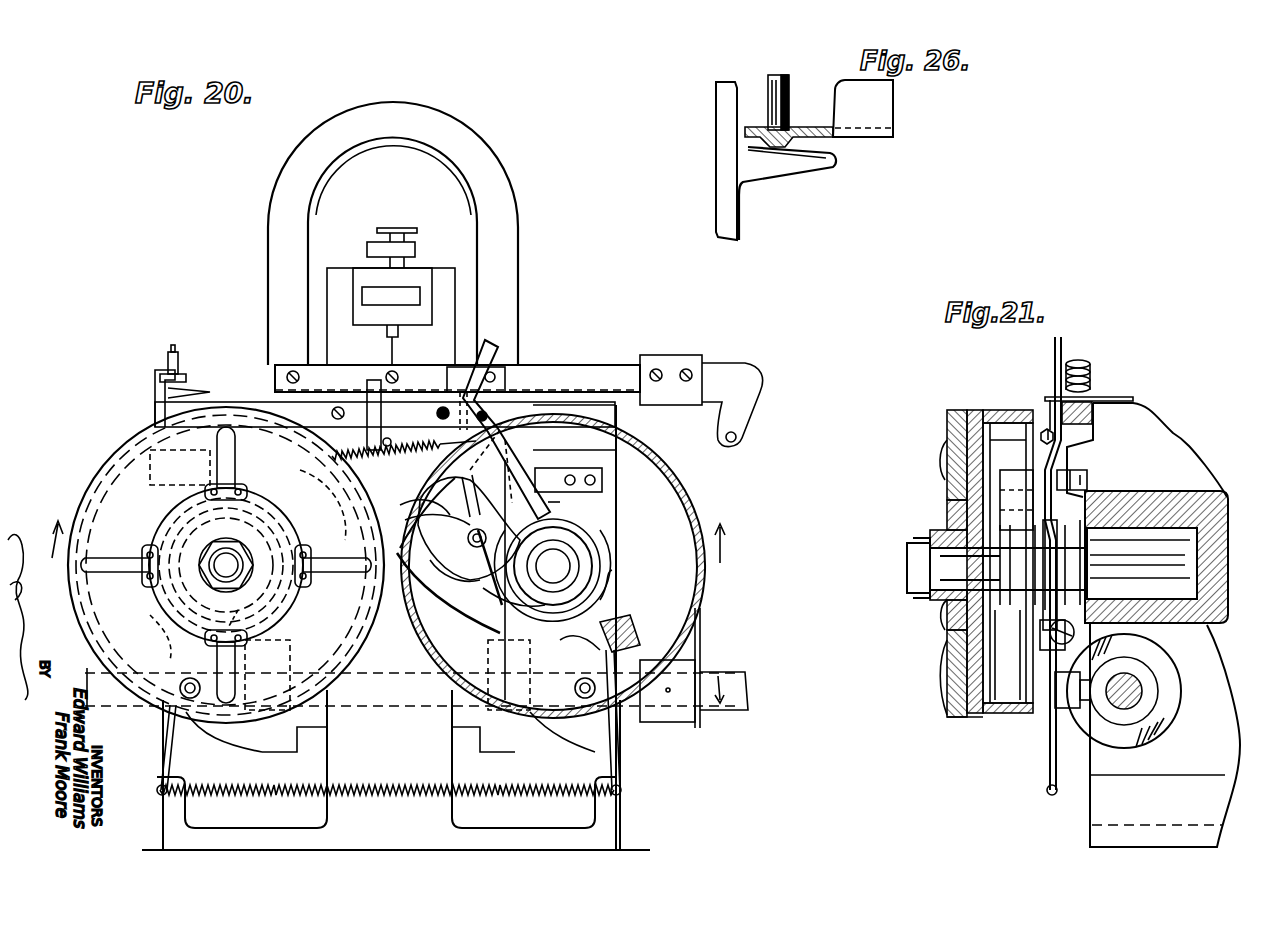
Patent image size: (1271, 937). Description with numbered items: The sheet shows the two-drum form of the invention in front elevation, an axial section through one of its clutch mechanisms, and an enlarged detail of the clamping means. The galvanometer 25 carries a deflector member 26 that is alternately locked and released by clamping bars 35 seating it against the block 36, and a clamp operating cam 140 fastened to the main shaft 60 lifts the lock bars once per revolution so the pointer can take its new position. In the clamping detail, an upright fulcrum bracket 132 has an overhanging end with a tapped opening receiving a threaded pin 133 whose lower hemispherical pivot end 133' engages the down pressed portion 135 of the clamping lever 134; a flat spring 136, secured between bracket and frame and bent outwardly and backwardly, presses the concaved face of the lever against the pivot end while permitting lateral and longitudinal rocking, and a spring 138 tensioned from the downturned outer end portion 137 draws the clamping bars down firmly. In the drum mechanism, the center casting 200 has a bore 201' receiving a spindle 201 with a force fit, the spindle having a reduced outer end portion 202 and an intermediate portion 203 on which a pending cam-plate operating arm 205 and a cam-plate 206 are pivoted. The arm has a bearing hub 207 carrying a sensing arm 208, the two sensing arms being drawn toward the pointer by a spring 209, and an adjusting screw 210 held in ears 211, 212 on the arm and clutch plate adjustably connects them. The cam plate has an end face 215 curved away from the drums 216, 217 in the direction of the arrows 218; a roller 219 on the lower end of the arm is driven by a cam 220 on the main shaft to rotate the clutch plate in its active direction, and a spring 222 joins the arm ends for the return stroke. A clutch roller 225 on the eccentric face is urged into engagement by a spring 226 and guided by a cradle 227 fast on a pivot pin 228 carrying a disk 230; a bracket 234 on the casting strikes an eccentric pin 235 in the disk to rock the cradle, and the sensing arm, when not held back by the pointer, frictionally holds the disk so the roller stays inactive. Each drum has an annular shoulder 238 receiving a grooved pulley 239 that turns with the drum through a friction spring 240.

In FIG. 20, the galvanometer 25 is at (340, 160).
In FIG. 20, the deflector member 26 is at (452, 400).
In FIG. 21, the deflector member 26 is at (1125, 387).
In FIG. 20, the clamping bars 35 is at (340, 375).
In FIG. 21, the clamping bars 35 is at (1087, 362).
In FIG. 20, the block 36 is at (317, 410).
In FIG. 21, the block 36 is at (1093, 417).
In FIG. 20, the main shaft 60 is at (737, 673).
In FIG. 21, the main shaft 60 is at (1133, 685).
In FIG. 20, the fulcrum bracket 132 is at (160, 373).
In FIG. 26, the fulcrum bracket 132 is at (720, 113).
In FIG. 20, the threaded pin 133 is at (164, 350).
In FIG. 26, the threaded pin 133 is at (762, 93).
In FIG. 26, the hemispherical pivot end 133' is at (801, 103).
In FIG. 20, the clamping lever 134 is at (600, 370).
In FIG. 26, the clamping lever 134 is at (887, 110).
In FIG. 26, the down pressed portion 135 is at (797, 137).
In FIG. 20, the flat spring 136 is at (200, 395).
In FIG. 26, the flat spring 136 is at (763, 160).
In FIG. 20, the downturned outer end portion 137 is at (743, 441).
In FIG. 20, the spring 138 is at (682, 400).
In FIG. 20, the clamp operating cam 140 is at (702, 637).
In FIG. 20, the center casting 200 is at (617, 515).
In FIG. 21, the center casting 200 is at (1153, 625).
In FIG. 20, the spindle 201 is at (575, 570).
In FIG. 21, the spindle 201 is at (1020, 536).
In FIG. 21, the bore 201' is at (1156, 545).
In FIG. 21, the reduced outer end portion 202 is at (918, 595).
In FIG. 21, the intermediate portion 203 is at (1008, 602).
In FIG. 20, the cam-plate operating arm 205 is at (170, 745).
In FIG. 21, the cam-plate operating arm 205 is at (1043, 747).
In FIG. 20, the cam-plate 206 is at (302, 477).
In FIG. 21, the cam-plate 206 is at (1025, 470).
In FIG. 21, the bearing hub 207 is at (1073, 547).
In FIG. 20, the sensing arm 208 is at (498, 355).
In FIG. 21, the sensing arm 208 is at (1062, 350).
In FIG. 20, the spring 209 is at (440, 445).
In FIG. 21, the spring 209 is at (1047, 431).
In FIG. 20, the adjusting screw 210 is at (148, 620).
In FIG. 21, the adjusting screw 210 is at (1075, 633).
In FIG. 20, the ear 211 is at (597, 633).
In FIG. 20, the ear 212 is at (617, 580).
In FIG. 21, the ear 212 is at (1040, 657).
In FIG. 20, the end face 215 is at (445, 505).
In FIG. 20, the drum 216 is at (113, 456).
In FIG. 20, the drum 217 is at (667, 476).
In FIG. 21, the drum 217 is at (1000, 410).
In FIG. 20, the arrow 218 is at (722, 550).
In FIG. 20, the roller 219 is at (170, 673).
In FIG. 21, the roller 219 is at (1065, 708).
In FIG. 20, the cam 220 is at (247, 743).
In FIG. 21, the cam 220 is at (1178, 695).
In FIG. 20, the spring 222 is at (372, 760).
In FIG. 21, the spring 222 is at (1040, 790).
In FIG. 20, the clutch roller 225 is at (470, 520).
In FIG. 20, the spring 226 is at (317, 562).
In FIG. 20, the cradle 227 is at (467, 513).
In FIG. 21, the cradle 227 is at (967, 517).
In FIG. 20, the pivot pin 228 is at (483, 588).
In FIG. 20, the disk 230 is at (455, 575).
In FIG. 20, the bracket 234 is at (547, 473).
In FIG. 21, the bracket 234 is at (1080, 472).
In FIG. 20, the eccentric pin 235 is at (548, 502).
In FIG. 20, the annular shoulder 238 is at (295, 603).
In FIG. 21, the annular shoulder 238 is at (958, 642).
In FIG. 20, the grooved pulley 239 is at (337, 643).
In FIG. 21, the grooved pulley 239 is at (950, 710).
In FIG. 20, the friction spring 240 is at (217, 458).
In FIG. 21, the friction spring 240 is at (943, 673).